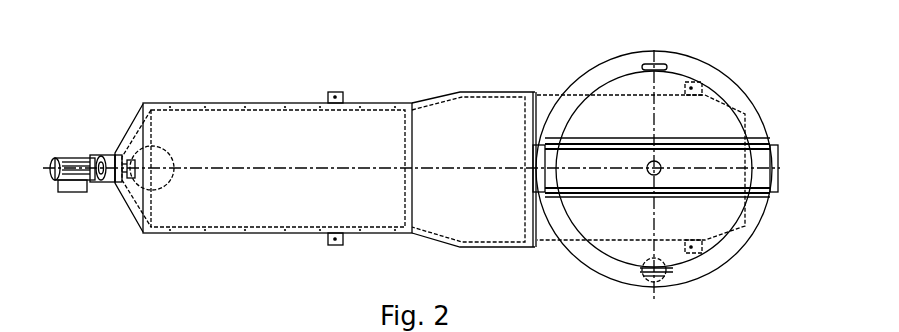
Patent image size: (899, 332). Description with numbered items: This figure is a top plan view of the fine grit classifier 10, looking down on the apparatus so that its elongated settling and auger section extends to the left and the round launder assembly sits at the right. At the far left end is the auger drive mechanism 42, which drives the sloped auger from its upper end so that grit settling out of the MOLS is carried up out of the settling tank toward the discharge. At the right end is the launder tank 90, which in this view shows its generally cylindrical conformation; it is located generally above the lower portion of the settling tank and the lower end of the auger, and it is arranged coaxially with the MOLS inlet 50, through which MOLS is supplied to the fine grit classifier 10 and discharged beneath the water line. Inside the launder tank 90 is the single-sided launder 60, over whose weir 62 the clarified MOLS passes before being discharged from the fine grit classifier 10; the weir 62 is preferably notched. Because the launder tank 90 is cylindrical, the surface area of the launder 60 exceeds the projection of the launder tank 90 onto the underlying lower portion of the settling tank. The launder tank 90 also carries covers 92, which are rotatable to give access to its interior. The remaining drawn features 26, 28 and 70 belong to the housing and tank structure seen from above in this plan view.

The fine grit classifier 10 is at (797, 162).
The transition housing section 26 is at (475, 133).
The housing 28 is at (312, 117).
The auger drive mechanism 42 is at (83, 160).
The inlet 50 is at (659, 173).
The launder 60 is at (757, 213).
The weir 62 is at (690, 255).
The outlet 70 is at (656, 295).
The launder tank 90 is at (605, 116).
The covers 92 is at (625, 123).